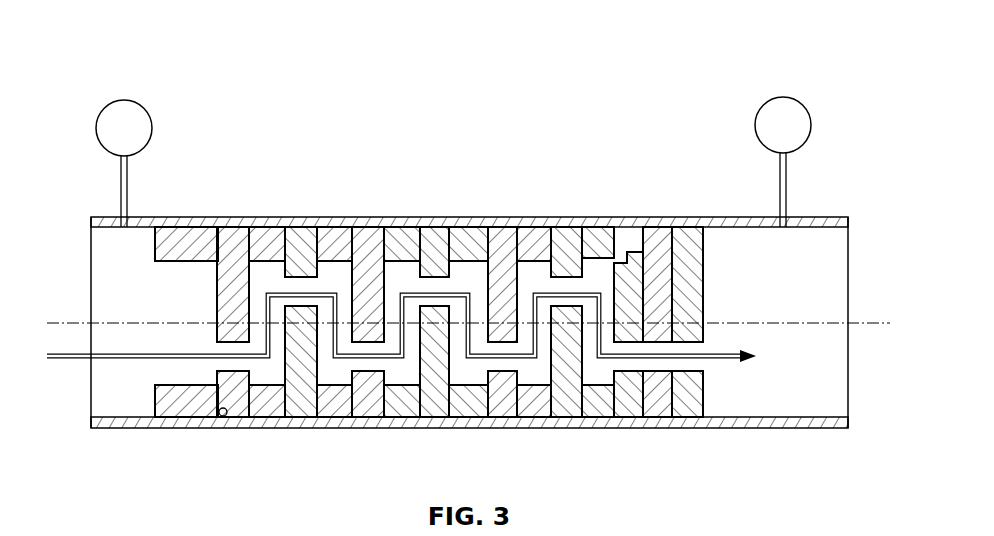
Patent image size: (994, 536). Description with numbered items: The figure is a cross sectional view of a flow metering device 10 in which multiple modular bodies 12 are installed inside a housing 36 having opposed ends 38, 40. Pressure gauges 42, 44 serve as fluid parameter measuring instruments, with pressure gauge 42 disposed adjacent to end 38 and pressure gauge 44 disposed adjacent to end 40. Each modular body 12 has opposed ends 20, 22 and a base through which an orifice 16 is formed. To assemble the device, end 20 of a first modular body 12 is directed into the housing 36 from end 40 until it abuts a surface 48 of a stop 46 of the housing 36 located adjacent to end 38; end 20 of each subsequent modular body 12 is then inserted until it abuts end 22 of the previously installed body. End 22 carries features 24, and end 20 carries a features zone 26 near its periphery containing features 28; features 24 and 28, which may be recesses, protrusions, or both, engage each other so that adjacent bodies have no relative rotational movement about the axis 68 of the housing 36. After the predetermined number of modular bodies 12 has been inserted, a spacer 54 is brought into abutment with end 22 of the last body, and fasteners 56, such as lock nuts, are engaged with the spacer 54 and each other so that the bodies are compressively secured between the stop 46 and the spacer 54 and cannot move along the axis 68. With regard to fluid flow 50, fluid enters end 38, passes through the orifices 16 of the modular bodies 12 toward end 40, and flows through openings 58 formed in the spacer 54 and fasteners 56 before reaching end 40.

The flow metering device 10 is at (120, 44).
The modular body 12 is at (215, 248).
The orifice 16 is at (232, 352).
The end 20 is at (218, 240).
The end 22 is at (288, 236).
The features 24 is at (352, 392).
The features zone 26 is at (283, 238).
The features 28 is at (352, 410).
The housing 36 is at (427, 316).
The end 38 is at (92, 300).
The end 40 is at (850, 288).
The pressure gauge 42 is at (125, 100).
The pressure gauge 44 is at (782, 97).
The stop 46 is at (157, 400).
The surface 48 is at (222, 416).
The fluid flow 50 is at (722, 358).
The spacer 54 is at (625, 250).
The fasteners 56 is at (657, 235).
The openings 58 is at (648, 365).
The axis 68 is at (875, 325).